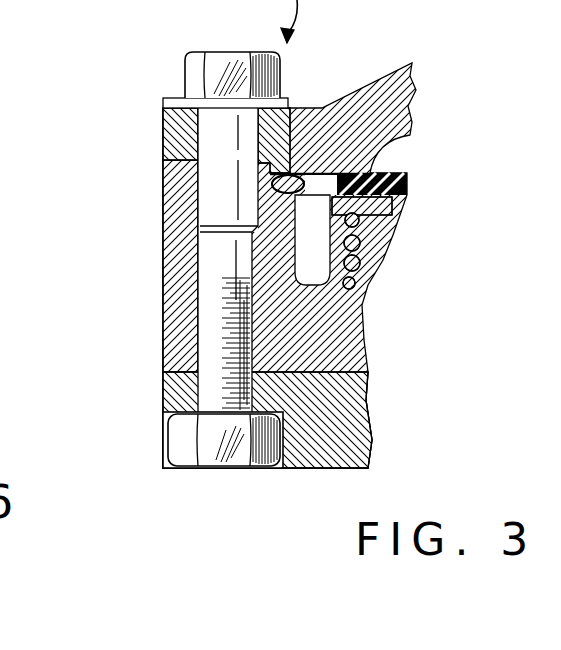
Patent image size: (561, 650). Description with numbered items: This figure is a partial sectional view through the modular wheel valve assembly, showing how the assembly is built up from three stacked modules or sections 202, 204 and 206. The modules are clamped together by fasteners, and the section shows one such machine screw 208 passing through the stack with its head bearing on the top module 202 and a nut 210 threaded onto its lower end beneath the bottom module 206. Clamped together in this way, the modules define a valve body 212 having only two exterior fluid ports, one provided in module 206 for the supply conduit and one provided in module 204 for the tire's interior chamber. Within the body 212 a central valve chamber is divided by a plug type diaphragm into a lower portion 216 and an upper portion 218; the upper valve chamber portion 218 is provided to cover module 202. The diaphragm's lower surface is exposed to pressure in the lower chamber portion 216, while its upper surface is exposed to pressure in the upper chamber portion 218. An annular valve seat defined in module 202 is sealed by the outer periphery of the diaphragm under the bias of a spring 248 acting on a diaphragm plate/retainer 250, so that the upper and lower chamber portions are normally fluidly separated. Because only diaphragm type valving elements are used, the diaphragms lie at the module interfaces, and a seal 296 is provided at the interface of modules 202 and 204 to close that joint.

The module 202 is at (178, 142).
The module 204 is at (178, 215).
The module 206 is at (178, 396).
The machine screw 208 is at (190, 73).
The nut 210 is at (226, 448).
The valve body 212 is at (178, 322).
The lower portion of valve chamber 216 is at (313, 252).
The upper portion of valve chamber 218 is at (398, 161).
The spring 248 is at (365, 240).
The diaphragm plate/retainer 250 is at (383, 208).
The seal 296 is at (287, 172).